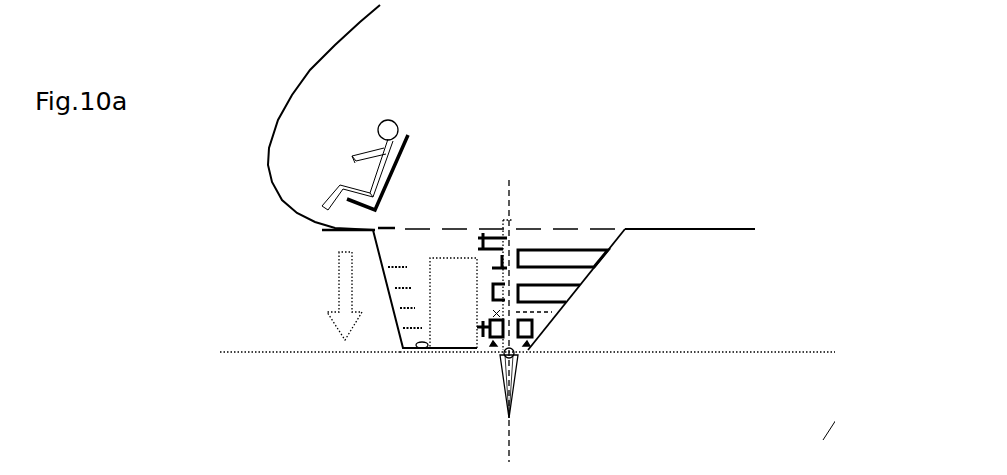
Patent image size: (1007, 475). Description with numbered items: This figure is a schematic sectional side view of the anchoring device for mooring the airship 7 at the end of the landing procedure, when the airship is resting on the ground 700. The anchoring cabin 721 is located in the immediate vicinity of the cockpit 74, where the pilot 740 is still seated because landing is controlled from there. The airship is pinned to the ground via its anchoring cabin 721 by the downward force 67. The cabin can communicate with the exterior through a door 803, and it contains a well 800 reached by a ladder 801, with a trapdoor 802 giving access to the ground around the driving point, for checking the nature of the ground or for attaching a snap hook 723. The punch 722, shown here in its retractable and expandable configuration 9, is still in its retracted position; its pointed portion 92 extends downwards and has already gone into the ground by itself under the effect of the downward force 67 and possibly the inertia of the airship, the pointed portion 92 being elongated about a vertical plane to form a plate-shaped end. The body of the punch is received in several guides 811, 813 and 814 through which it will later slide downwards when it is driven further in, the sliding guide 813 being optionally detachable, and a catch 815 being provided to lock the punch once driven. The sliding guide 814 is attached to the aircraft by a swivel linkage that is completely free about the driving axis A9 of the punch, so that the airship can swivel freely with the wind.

The airship 7 is at (306, 16).
The cockpit 74 is at (293, 88).
The pilot 740 is at (397, 124).
The anchoring cabin 721 is at (322, 237).
The ladder 801 is at (400, 230).
The door 803 is at (394, 247).
The trapdoor 802 is at (414, 310).
The downward force 67 is at (340, 300).
The snap hook 723 is at (394, 338).
The well 800 is at (437, 233).
The retractable and expandable punch configuration 9 is at (510, 221).
The punch 722 is at (641, 289).
The driving axis A9 is at (514, 452).
The guide 811 is at (558, 253).
The sliding guide 813 is at (550, 290).
The sliding guide 814 is at (533, 320).
The catch 815 is at (477, 355).
The pointed portion 92 is at (517, 377).
The ground 700 is at (748, 352).